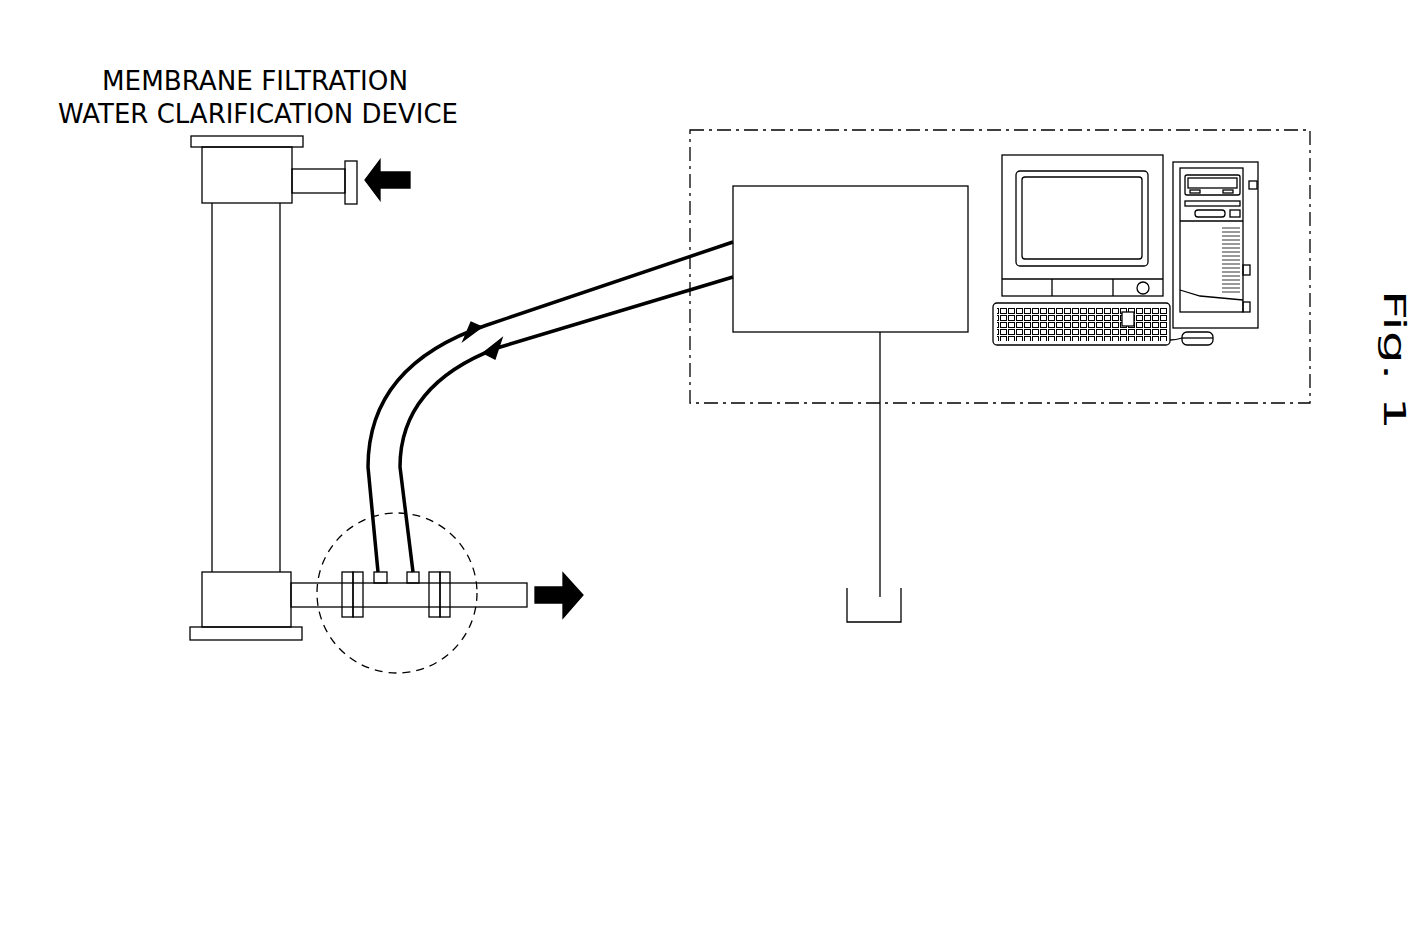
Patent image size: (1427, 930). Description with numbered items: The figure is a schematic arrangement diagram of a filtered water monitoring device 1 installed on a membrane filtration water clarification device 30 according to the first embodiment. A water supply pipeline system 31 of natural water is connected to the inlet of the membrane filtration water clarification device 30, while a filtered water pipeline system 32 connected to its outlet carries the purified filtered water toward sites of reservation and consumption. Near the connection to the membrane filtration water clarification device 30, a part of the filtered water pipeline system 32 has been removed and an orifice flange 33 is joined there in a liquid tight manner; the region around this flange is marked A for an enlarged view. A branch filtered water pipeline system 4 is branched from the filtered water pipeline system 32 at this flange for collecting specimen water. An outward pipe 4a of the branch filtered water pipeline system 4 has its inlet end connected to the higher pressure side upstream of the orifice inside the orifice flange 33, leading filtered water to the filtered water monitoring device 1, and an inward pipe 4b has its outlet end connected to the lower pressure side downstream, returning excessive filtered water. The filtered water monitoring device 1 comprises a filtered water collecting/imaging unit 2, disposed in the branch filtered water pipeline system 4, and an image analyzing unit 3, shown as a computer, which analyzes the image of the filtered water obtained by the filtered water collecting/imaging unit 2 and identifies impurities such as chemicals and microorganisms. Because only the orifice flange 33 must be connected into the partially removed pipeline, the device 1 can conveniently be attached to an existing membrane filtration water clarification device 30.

The filtered water monitoring device 1 is at (925, 128).
The filtered water collecting/imaging unit 2 is at (831, 185).
The image analyzing unit 3 is at (1083, 152).
The branch filtered water pipeline system 4 is at (550, 395).
The outward pipe 4a is at (436, 340).
The inward pipe 4b is at (452, 377).
The membrane filtration water clarification device 30 is at (205, 343).
The water supply pipeline system 31 is at (315, 194).
The filtered water pipeline system 32 is at (497, 608).
The orifice flange 33 is at (393, 608).
The sampling region A is at (465, 540).